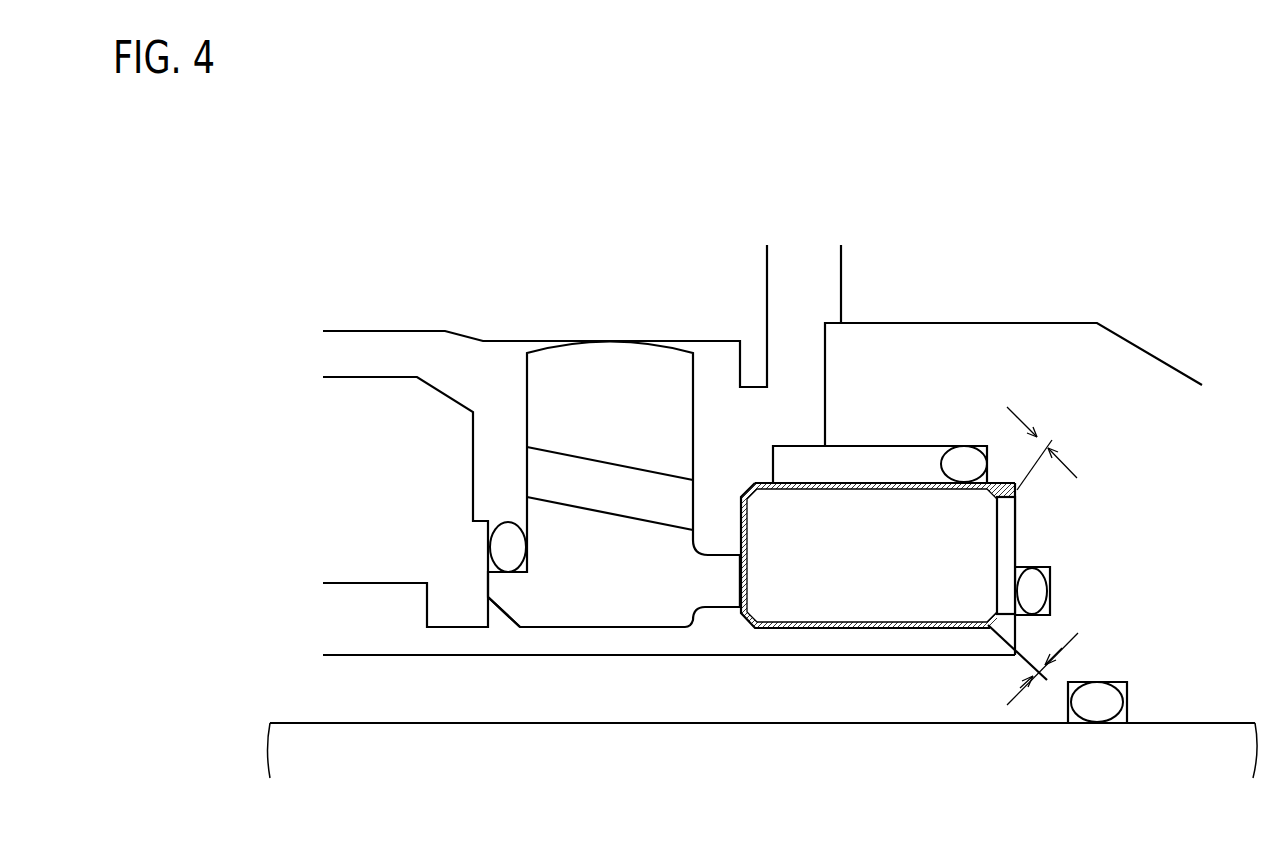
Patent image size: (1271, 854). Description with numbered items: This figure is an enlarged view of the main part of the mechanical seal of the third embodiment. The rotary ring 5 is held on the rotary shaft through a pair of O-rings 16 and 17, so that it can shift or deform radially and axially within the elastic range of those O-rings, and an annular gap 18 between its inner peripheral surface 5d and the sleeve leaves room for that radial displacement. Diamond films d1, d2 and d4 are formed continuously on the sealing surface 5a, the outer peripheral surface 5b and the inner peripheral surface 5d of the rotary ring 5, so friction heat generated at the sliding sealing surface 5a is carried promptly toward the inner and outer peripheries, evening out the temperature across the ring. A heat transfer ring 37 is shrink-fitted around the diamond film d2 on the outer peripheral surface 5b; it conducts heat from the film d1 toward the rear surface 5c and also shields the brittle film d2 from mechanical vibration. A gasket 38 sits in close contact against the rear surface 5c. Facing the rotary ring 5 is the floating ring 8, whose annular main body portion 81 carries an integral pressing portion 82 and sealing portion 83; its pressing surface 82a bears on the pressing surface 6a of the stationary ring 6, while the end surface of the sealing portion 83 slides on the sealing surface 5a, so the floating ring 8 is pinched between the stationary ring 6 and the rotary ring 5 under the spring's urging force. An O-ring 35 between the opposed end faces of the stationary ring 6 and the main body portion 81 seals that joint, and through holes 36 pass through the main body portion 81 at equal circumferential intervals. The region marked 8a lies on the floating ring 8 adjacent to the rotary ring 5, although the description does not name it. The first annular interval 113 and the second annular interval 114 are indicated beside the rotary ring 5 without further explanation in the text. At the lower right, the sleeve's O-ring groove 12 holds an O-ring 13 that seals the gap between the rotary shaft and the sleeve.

The rotary ring 5 is at (892, 589).
The sealing surface 5a is at (752, 600).
The outer peripheral surface 5b is at (787, 480).
The rear surface 5c is at (1008, 525).
The inner peripheral surface 5d is at (960, 630).
The stationary ring 6 is at (360, 560).
The pressing surface 6a is at (513, 603).
The floating ring 8 is at (608, 513).
The piston end face 8a is at (748, 590).
The O-ring groove 12 is at (1098, 742).
The O-ring 13 is at (1100, 708).
The O-ring 16 is at (1042, 590).
The O-ring 17 is at (966, 462).
The annular gap 18 is at (852, 640).
The O-ring 35 is at (507, 540).
The through holes 36 is at (605, 490).
The heat transfer ring 37 is at (800, 462).
The gasket 38 is at (1008, 546).
The main body portion 81 is at (608, 580).
The pressing portion 82 is at (540, 600).
The pressing surface 82a is at (495, 606).
The sealing portion 83 is at (720, 600).
The first annular interval 113 is at (1045, 438).
The second annular interval 114 is at (1040, 672).
The diamond film d1 is at (737, 523).
The diamond film d2 is at (885, 482).
The diamond film d4 is at (931, 628).